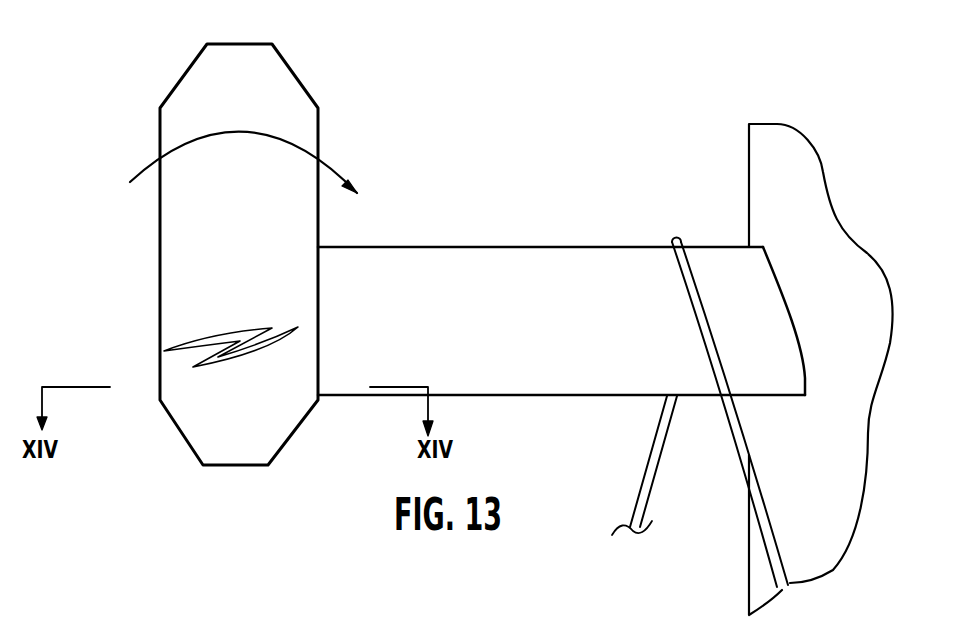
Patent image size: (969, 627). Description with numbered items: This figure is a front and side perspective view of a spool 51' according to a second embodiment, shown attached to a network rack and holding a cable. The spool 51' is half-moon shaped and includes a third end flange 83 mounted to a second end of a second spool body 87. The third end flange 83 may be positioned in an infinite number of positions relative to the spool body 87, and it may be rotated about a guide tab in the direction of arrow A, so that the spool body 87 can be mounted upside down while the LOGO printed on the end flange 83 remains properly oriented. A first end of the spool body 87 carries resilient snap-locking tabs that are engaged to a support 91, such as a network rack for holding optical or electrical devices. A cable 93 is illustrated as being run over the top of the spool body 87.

The third end flange 83 is at (203, 89).
The second spool body 87 is at (496, 340).
The support 91 is at (807, 221).
The cable 93 is at (645, 461).
The spool 51' is at (664, 376).
The arrow A is at (339, 166).